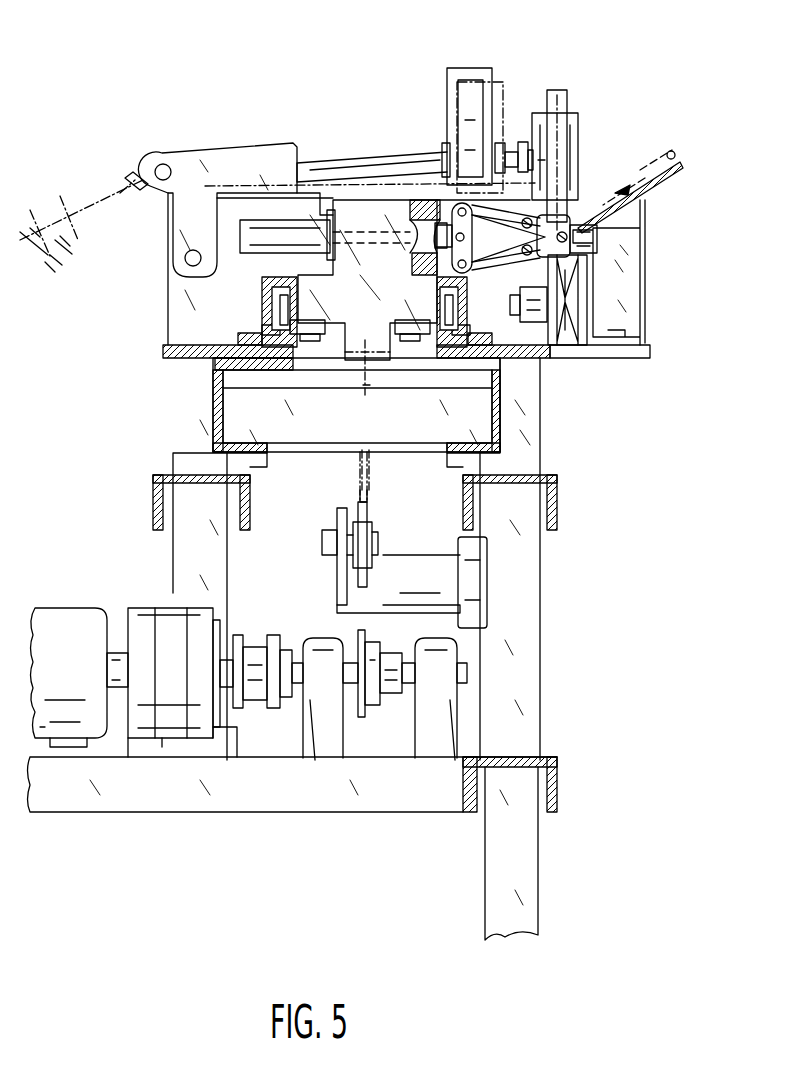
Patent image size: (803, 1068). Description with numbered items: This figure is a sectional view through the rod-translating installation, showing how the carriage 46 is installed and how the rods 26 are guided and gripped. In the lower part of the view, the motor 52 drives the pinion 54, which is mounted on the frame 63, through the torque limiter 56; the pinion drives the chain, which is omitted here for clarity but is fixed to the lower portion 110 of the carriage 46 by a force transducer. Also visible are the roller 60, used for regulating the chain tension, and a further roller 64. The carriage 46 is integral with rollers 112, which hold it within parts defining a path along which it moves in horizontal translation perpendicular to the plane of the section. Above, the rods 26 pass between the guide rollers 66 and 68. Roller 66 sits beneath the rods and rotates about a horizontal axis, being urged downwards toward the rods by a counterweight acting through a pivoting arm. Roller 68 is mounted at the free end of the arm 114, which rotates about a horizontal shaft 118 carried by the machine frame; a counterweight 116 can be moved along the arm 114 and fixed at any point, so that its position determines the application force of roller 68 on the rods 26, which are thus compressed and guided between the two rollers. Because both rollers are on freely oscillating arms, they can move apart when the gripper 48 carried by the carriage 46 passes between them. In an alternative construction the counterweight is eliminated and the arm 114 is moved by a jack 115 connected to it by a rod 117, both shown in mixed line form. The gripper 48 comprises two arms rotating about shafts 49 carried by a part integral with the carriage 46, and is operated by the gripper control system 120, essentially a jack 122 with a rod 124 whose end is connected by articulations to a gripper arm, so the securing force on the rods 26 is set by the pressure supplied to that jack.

The rods 26 is at (583, 225).
The carriage 46 is at (350, 348).
The gripper 48 is at (592, 245).
The shafts 49 is at (523, 232).
The motor 52 is at (75, 607).
The drive pinion 54 is at (360, 722).
The torque limiter 56 is at (167, 723).
The roller 60 is at (367, 505).
The frame 63 is at (262, 790).
The roller 64 is at (360, 483).
The roller 66 is at (565, 345).
The roller 68 is at (560, 95).
The lower portion 110 is at (390, 362).
The rollers 112 is at (283, 330).
The arm 114 is at (290, 165).
The jack 115 is at (30, 233).
The counterweight 116 is at (480, 70).
The rod 117 is at (100, 207).
The horizontal shaft 118 is at (190, 258).
The gripper control system 120 is at (315, 208).
The jack 122 is at (322, 232).
The rod 124 is at (424, 233).